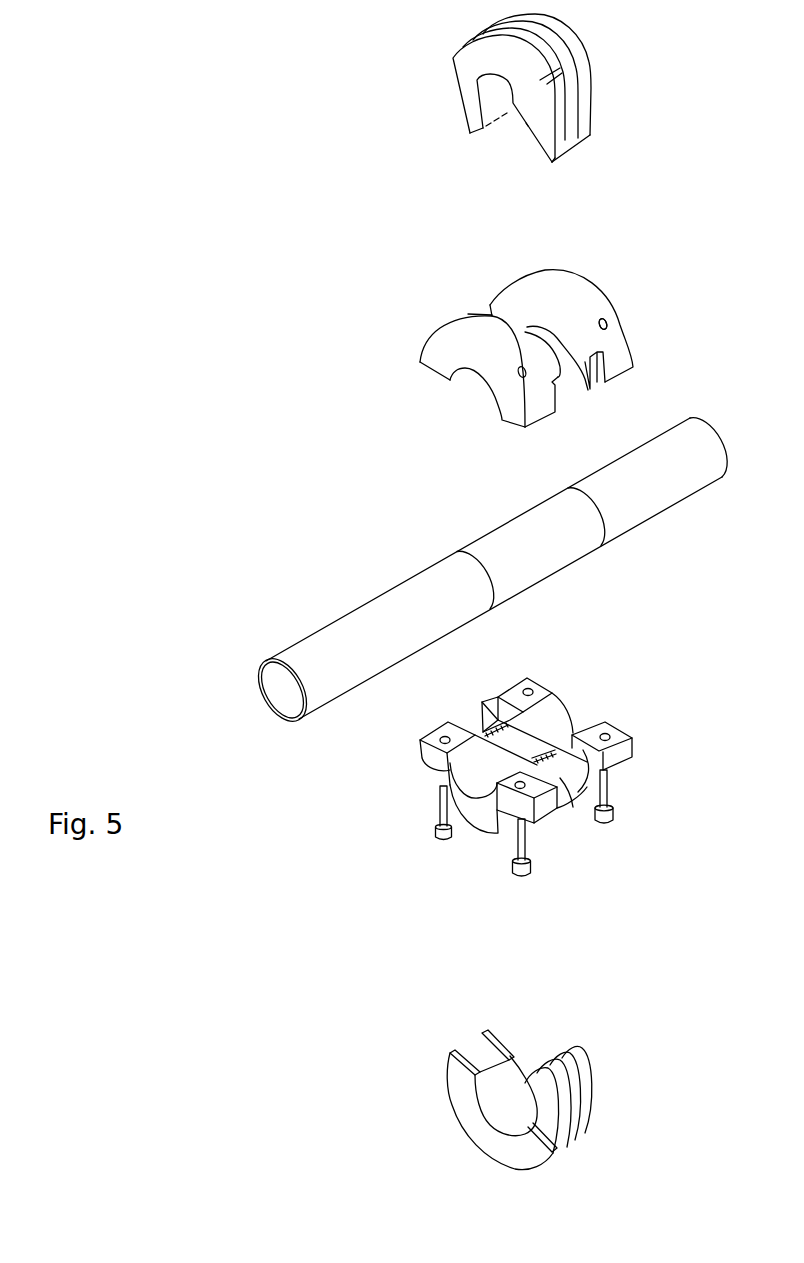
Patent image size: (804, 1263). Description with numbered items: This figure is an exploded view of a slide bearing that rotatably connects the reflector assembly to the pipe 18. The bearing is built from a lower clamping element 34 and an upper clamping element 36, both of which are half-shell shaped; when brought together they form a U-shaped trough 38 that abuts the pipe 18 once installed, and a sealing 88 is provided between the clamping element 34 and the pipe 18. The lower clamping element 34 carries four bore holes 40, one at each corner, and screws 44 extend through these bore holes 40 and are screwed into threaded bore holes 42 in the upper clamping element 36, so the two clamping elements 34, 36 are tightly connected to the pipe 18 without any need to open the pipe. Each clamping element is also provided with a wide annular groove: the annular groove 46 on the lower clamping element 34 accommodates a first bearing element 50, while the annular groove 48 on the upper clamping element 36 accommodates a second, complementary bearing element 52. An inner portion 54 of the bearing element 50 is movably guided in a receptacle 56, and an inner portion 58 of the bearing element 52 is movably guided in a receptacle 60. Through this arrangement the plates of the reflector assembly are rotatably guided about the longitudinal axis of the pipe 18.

The pipe 18 is at (650, 485).
The lower clamping element 34 is at (620, 752).
The upper clamping element 36 is at (570, 285).
The U-shaped trough 38 is at (533, 735).
The bore holes 40 is at (533, 694).
The threaded bore holes 42 is at (613, 325).
The screws 44 is at (518, 850).
The annular groove 46 is at (563, 777).
The annular groove 48 is at (490, 311).
The first bearing element 50 is at (475, 1120).
The second bearing element 52 is at (531, 121).
The inner portion 54 is at (578, 1092).
The receptacle 56 is at (475, 1053).
The inner portion 58 is at (456, 103).
The receptacle 60 is at (560, 121).
The sealing 88 is at (500, 528).